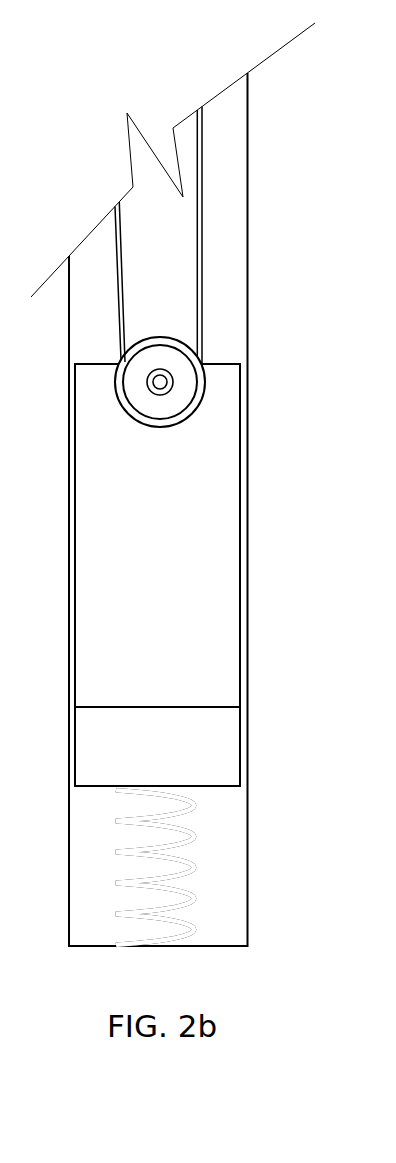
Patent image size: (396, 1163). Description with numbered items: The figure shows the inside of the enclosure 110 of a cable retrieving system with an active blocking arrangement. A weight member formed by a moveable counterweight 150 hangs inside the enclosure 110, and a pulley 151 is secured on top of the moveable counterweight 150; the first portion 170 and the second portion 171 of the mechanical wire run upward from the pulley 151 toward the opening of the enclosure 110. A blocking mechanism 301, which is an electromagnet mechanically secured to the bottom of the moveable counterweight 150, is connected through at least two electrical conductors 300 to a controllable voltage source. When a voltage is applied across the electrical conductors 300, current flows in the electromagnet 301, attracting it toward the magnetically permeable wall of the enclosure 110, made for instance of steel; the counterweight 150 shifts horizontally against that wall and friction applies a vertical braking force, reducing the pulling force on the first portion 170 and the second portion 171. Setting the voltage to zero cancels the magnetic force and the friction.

The enclosure 110 is at (241, 330).
The moveable counterweight 150 is at (240, 645).
The pulley 151 is at (150, 421).
The first portion of the mechanical wire 170 is at (123, 256).
The second portion of the mechanical wire 171 is at (194, 278).
The electrical conductors 300 is at (110, 790).
The blocking mechanism 301 is at (240, 742).